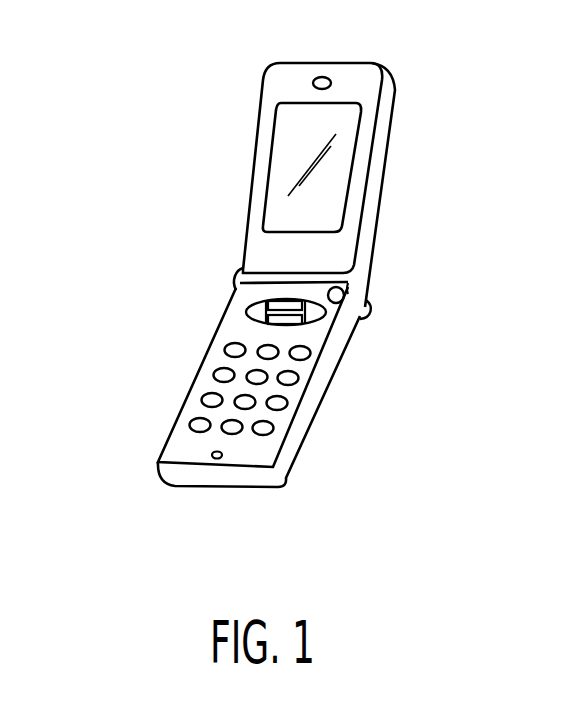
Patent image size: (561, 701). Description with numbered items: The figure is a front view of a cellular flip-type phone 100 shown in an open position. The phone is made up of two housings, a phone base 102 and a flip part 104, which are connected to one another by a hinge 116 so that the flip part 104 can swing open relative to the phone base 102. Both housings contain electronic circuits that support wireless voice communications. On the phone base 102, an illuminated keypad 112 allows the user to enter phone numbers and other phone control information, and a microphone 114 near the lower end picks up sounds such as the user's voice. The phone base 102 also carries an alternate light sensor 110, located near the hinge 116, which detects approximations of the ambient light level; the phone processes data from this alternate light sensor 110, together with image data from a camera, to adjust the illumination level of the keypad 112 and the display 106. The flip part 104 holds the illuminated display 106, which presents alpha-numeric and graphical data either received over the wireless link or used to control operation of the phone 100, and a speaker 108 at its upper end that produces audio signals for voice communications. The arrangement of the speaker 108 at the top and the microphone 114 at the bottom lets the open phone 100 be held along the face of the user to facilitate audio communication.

The cellular flip-type phone 100 is at (352, 565).
The phone base 102 is at (320, 392).
The flip part 104 is at (251, 184).
The display 106 is at (347, 178).
The speaker 108 is at (323, 77).
The alternate light sensor 110 is at (340, 288).
The keypad 112 is at (188, 362).
The microphone 114 is at (217, 460).
The hinge 116 is at (235, 277).